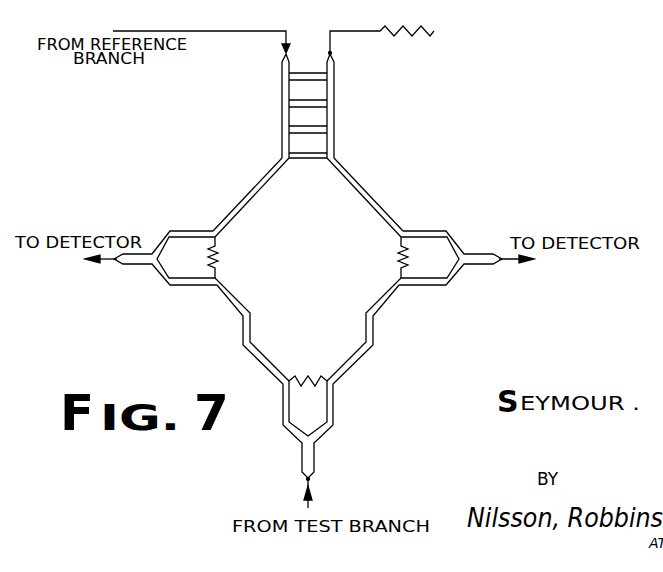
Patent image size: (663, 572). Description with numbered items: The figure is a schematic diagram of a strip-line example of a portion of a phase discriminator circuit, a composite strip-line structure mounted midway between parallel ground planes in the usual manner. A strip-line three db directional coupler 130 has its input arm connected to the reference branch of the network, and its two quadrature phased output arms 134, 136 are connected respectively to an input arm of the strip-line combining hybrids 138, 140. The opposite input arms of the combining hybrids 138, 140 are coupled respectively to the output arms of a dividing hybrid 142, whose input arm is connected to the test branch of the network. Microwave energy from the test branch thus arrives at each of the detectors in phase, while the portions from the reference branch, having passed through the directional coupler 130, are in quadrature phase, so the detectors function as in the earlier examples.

The strip-line 3 db directional coupler 130 is at (309, 267).
The quadrature phased output arm 134 is at (257, 183).
The quadrature phased output arm 136 is at (335, 135).
The strip-line combining hybrid 138 is at (199, 217).
The strip-line combining hybrid 140 is at (438, 222).
The dividing hybrid 142 is at (332, 440).